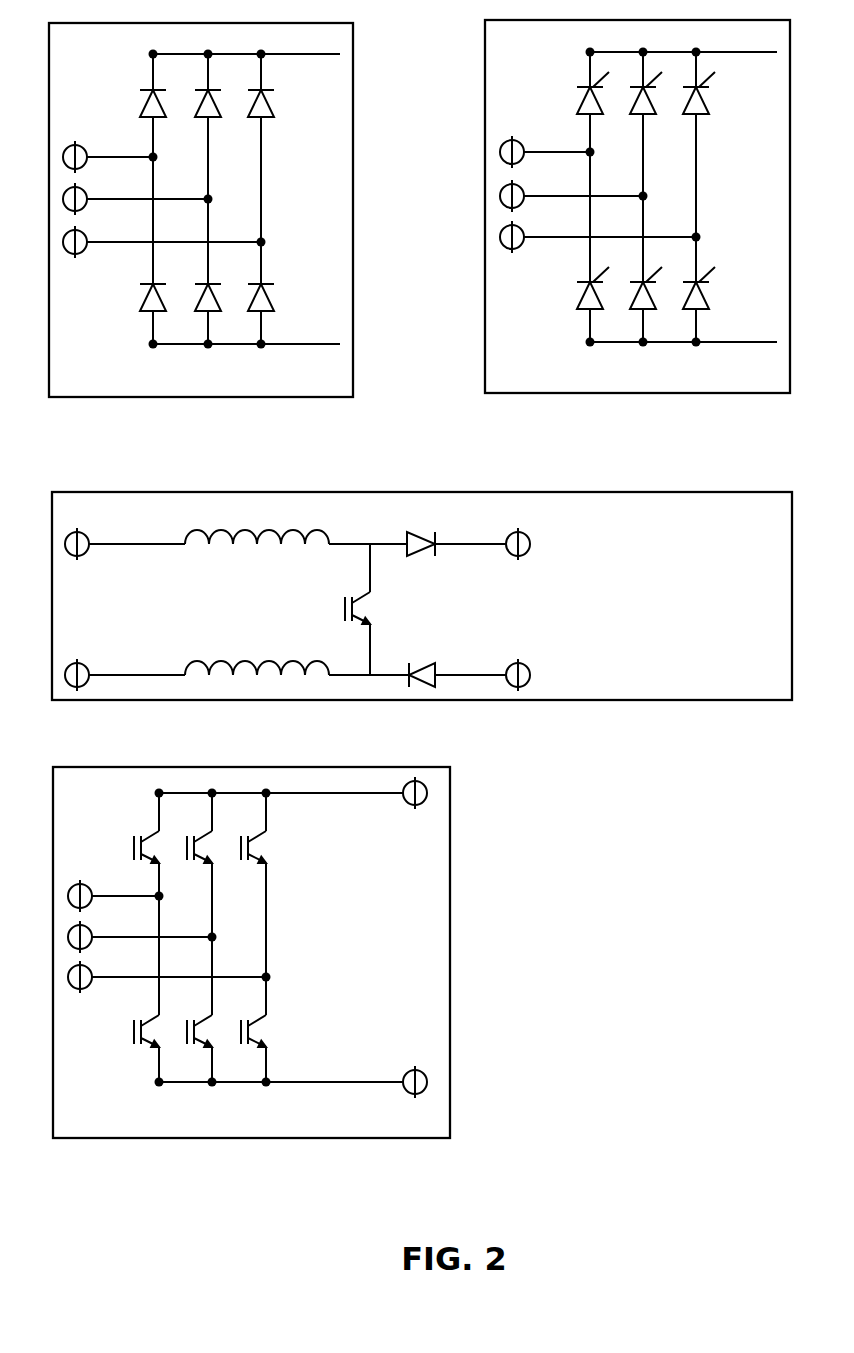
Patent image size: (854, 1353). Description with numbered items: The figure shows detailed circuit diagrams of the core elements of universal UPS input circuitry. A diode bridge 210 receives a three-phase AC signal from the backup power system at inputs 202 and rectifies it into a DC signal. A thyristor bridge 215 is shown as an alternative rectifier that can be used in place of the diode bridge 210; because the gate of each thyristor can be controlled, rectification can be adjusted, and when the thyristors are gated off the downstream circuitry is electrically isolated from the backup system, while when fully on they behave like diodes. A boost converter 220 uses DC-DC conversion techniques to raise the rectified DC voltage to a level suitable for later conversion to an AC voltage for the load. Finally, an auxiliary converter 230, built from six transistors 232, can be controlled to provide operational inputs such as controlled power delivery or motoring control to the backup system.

The inputs 202 is at (88, 165).
The diode bridge 210 is at (201, 228).
The thyristor bridge 215 is at (625, 393).
The boost converter 220 is at (572, 700).
The auxiliary converter 230 is at (251, 970).
The transistors 232 is at (153, 848).